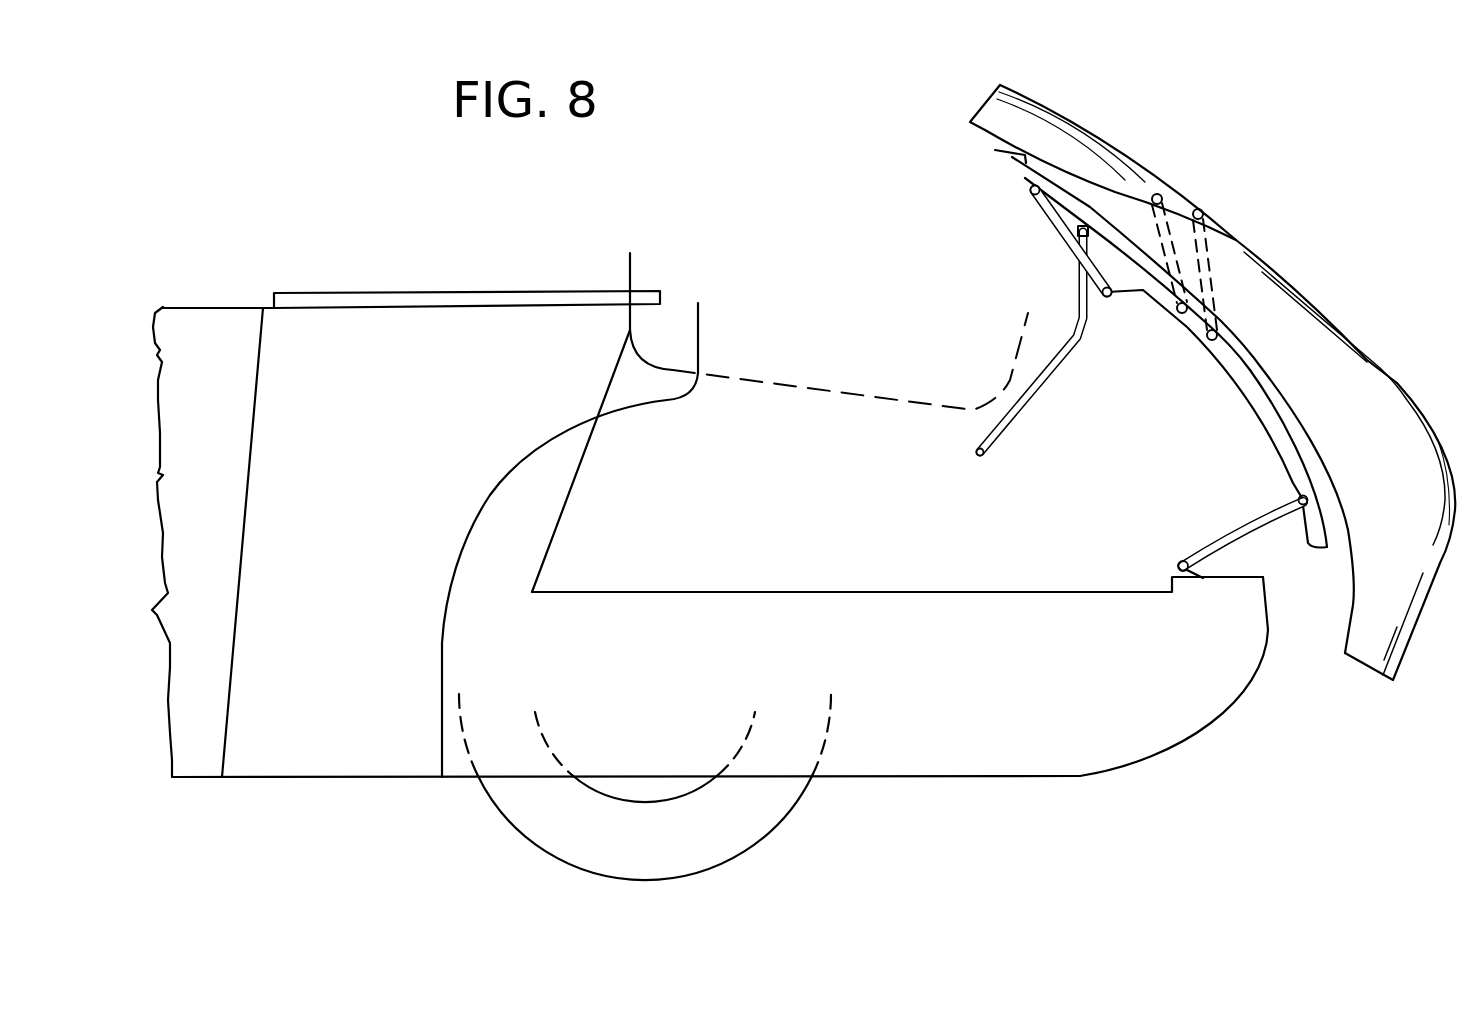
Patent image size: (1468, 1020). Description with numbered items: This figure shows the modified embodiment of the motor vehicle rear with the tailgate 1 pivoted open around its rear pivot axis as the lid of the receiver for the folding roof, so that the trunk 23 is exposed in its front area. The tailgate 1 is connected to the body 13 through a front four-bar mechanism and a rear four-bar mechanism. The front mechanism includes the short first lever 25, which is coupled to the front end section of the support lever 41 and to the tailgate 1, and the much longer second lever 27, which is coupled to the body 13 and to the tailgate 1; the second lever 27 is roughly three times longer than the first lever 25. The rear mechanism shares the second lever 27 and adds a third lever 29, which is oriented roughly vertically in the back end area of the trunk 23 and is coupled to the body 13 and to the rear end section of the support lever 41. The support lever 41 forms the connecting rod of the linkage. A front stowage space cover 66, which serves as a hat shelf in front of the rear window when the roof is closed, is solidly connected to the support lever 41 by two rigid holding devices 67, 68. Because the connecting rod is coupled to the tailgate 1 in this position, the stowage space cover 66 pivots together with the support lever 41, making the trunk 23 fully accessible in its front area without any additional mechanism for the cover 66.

The tailgate 1 is at (1308, 328).
The body 13 is at (497, 365).
The trunk 23 is at (863, 359).
The first lever 25 is at (1057, 220).
The second lever 27 is at (1040, 387).
The third lever 29 is at (1240, 542).
The support lever 41 is at (1263, 398).
The front stowage space cover 66 is at (1090, 157).
The rigid holding device 67 is at (1180, 215).
The rigid holding device 68 is at (1210, 258).